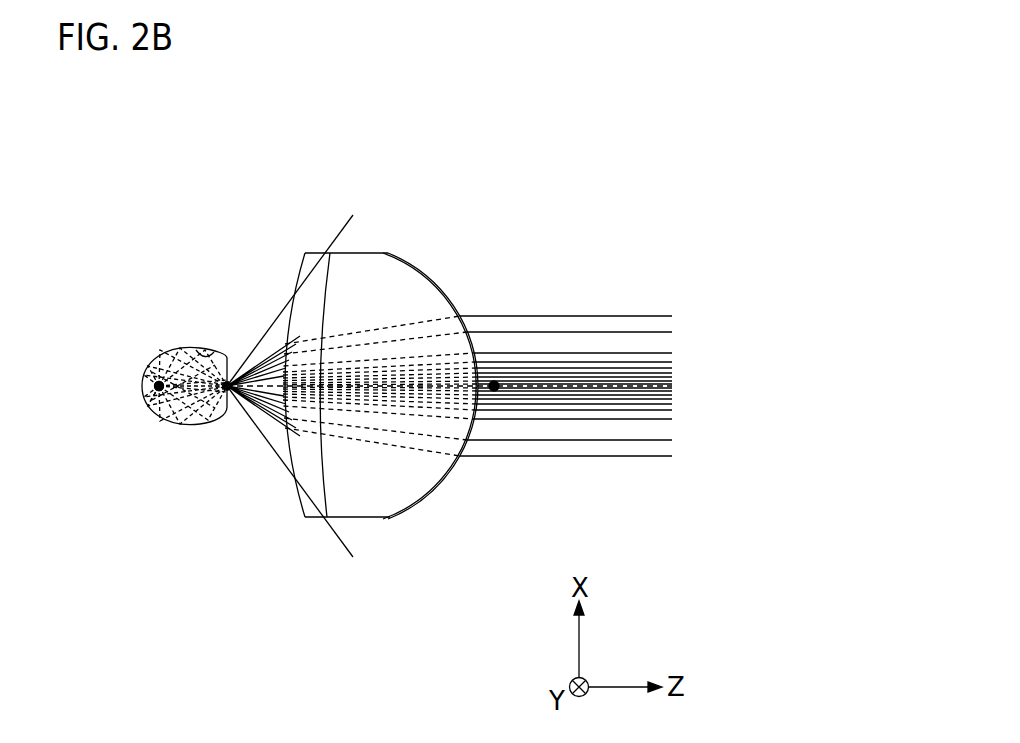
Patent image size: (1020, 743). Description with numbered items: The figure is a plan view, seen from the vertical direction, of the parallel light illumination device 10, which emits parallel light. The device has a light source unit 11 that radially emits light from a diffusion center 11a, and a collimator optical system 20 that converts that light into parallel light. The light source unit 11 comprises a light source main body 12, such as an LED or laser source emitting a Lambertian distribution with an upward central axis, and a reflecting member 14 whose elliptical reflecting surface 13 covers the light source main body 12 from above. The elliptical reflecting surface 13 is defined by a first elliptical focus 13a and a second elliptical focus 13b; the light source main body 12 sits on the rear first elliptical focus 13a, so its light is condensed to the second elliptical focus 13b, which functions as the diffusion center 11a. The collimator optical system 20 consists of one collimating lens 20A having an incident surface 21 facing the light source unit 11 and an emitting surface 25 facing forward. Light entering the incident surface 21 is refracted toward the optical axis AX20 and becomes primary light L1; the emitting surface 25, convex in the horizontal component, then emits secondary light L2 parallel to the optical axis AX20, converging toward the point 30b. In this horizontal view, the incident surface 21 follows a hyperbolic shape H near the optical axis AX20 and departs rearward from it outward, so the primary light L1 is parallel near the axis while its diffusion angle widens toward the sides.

The parallel light illumination device 10 is at (607, 176).
The light source unit 11 is at (180, 348).
The diffusion center 11a is at (228, 390).
The light source main body 12 is at (147, 405).
The elliptical reflecting surface 13 is at (206, 352).
The first elliptical focus 13a is at (159, 413).
The second elliptical focus 13b is at (227, 386).
The reflecting member 14 is at (156, 358).
The collimator optical system 20 is at (305, 252).
The collimating lens 20A is at (302, 282).
The incident surface 21 is at (304, 500).
The emitting surface 25 is at (444, 492).
The focal point 30b is at (496, 382).
The optical axis AX20 is at (538, 392).
The primary light L1 is at (367, 330).
The secondary light L2 is at (613, 315).
The hyperbolic shape H is at (286, 428).